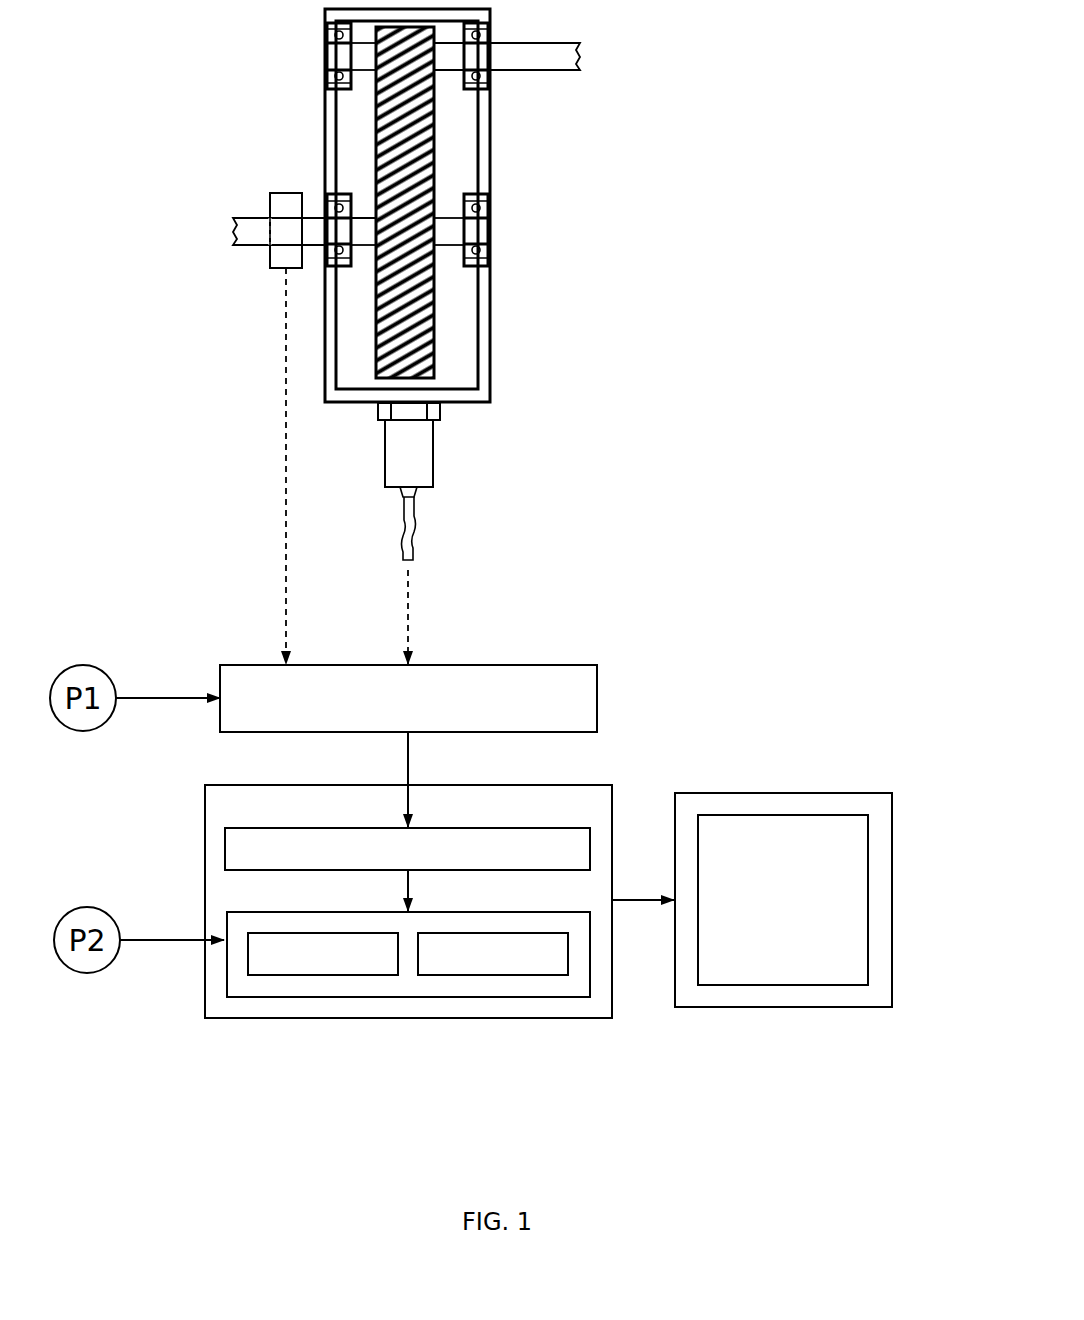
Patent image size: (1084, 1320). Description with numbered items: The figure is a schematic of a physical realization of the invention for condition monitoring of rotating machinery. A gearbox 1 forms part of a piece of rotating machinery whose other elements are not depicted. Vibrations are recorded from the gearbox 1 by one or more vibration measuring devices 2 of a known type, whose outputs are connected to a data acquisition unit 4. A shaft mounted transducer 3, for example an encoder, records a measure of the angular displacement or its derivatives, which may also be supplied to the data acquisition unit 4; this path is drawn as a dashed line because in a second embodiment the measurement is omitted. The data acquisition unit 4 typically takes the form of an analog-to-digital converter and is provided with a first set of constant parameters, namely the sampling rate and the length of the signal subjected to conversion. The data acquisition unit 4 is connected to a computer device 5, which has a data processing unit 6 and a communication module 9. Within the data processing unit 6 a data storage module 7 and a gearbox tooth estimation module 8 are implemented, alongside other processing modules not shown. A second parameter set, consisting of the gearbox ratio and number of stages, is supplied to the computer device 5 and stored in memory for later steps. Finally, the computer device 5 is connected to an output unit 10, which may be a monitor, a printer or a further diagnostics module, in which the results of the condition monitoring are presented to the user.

The gearbox 1 is at (488, 322).
The vibration measuring device 2 is at (423, 452).
The shaft mounted transducer 3 is at (288, 210).
The data acquisition unit 4 is at (237, 692).
The computer device 5 is at (205, 963).
The data processing unit 6 is at (295, 998).
The data storage module 7 is at (307, 965).
The gearbox tooth estimation module 8 is at (537, 963).
The communication module 9 is at (570, 840).
The output unit 10 is at (832, 962).